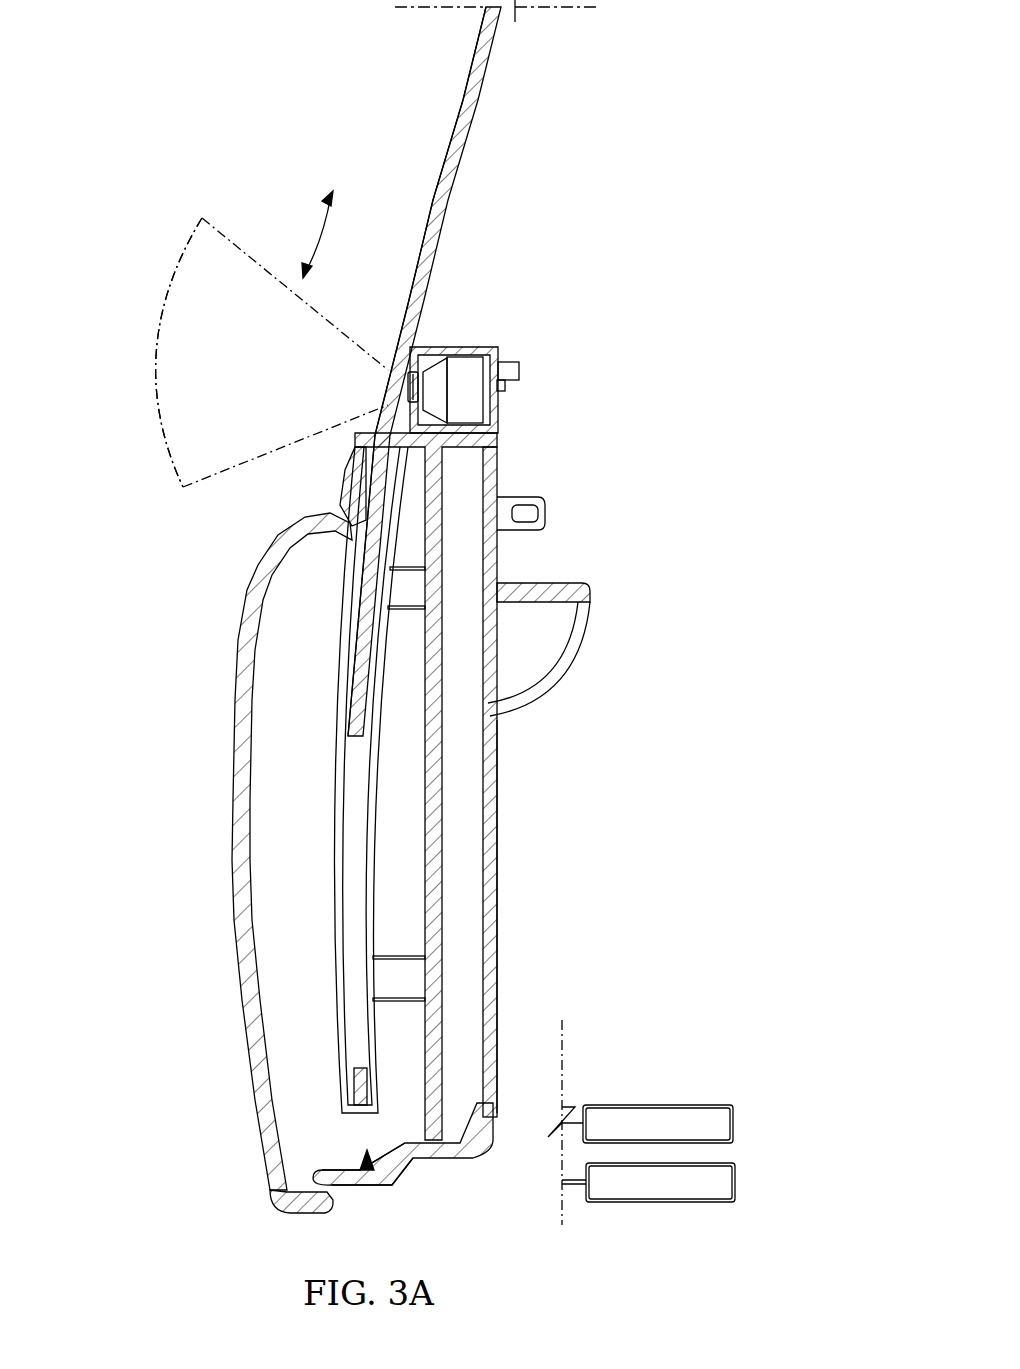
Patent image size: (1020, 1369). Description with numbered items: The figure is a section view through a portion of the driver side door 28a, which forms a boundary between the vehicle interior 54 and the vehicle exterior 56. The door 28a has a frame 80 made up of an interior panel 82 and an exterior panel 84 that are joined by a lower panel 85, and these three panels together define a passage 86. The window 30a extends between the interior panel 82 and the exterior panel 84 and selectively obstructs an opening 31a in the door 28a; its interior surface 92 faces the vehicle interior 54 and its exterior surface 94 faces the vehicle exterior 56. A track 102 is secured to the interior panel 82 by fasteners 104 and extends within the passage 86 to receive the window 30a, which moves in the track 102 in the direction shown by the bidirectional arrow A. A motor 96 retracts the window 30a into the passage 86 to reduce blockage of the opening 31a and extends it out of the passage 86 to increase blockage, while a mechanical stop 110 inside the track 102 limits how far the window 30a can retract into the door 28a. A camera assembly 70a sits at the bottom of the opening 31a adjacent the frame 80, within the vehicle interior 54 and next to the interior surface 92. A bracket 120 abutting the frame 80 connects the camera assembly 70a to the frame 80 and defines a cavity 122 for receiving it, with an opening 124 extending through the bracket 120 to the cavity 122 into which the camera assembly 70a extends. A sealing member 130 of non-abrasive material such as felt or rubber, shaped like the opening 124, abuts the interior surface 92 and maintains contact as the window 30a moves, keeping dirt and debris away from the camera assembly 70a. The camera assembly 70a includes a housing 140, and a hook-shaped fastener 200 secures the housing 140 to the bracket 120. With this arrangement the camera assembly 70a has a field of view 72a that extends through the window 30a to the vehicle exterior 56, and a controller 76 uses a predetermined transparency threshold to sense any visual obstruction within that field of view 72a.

The driver side door 28a is at (371, 829).
The window 30a is at (489, 79).
The opening 31a is at (442, 256).
The vehicle interior 54 is at (717, 394).
The vehicle exterior 56 is at (98, 362).
The camera assembly 70a is at (459, 361).
The field of view 72a is at (238, 361).
The controller 76 is at (736, 1185).
The frame 80 is at (255, 1207).
The interior panel 82 is at (497, 862).
The exterior panel 84 is at (238, 956).
The lower panel 85 is at (432, 1166).
The passage 86 is at (372, 1172).
The interior surface 92 is at (450, 189).
The exterior surface 94 is at (405, 368).
The motor 96 is at (734, 1125).
The track 102 is at (340, 780).
The fasteners 104 is at (399, 610).
The mechanical stop 110 is at (353, 1085).
The bracket 120 is at (498, 428).
The cavity 122 is at (358, 447).
The opening 124 is at (402, 412).
The sealing member 130 is at (412, 347).
The housing 140 is at (470, 375).
The fastener 200 is at (507, 389).
The bidirectional arrow A is at (308, 234).